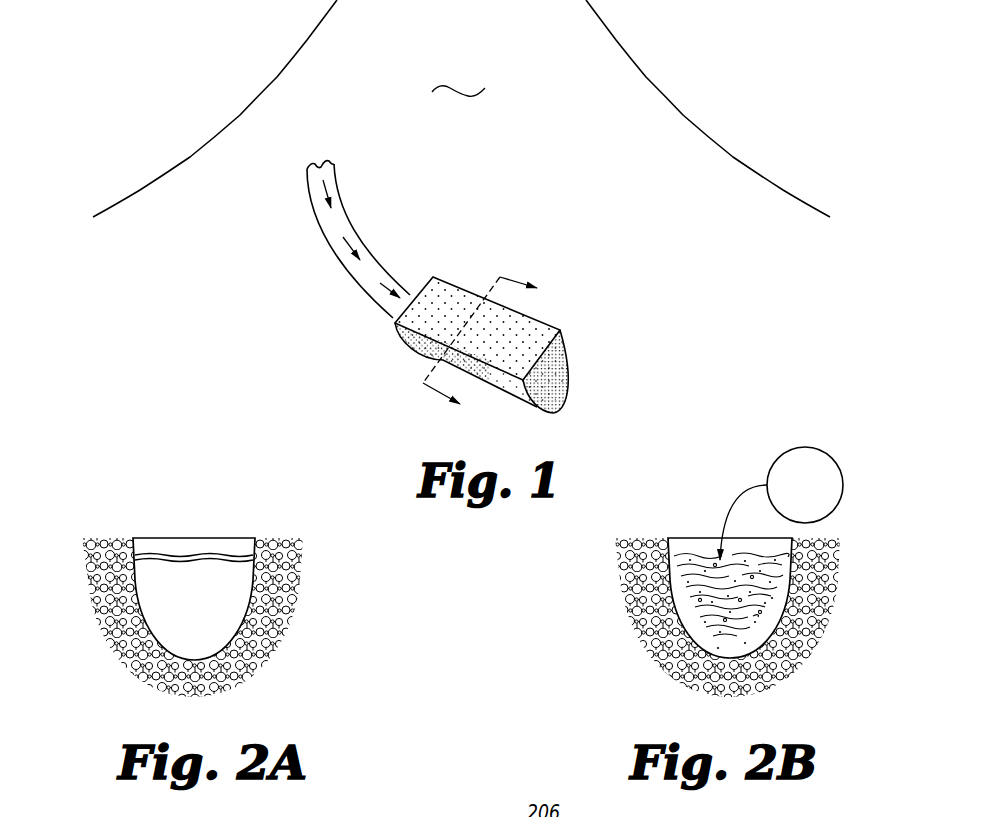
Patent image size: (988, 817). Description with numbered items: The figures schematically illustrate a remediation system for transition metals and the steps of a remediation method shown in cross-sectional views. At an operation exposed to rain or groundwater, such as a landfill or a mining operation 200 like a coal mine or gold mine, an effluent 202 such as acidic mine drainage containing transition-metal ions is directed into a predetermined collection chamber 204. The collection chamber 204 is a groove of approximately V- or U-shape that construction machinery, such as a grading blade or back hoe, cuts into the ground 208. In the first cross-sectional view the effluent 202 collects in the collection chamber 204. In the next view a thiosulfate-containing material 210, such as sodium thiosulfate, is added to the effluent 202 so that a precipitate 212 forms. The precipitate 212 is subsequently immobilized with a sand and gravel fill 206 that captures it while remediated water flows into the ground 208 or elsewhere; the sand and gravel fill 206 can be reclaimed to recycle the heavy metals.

In FIG. 1, the mining operation 200 is at (460, 82).
In FIG. 1, the effluent 202 is at (343, 198).
In FIG. 2A, the effluent 202 is at (217, 555).
In FIG. 1, the collection chamber 204 is at (462, 287).
In FIG. 2A, the collection chamber 204 is at (177, 538).
In FIG. 1, the sand and gravel fill 206 is at (520, 347).
In FIG. 2A, the ground 208 is at (127, 638).
In FIG. 2B, the thiosulfate-containing material 210 is at (803, 447).
In FIG. 2B, the precipitate 212 is at (733, 620).